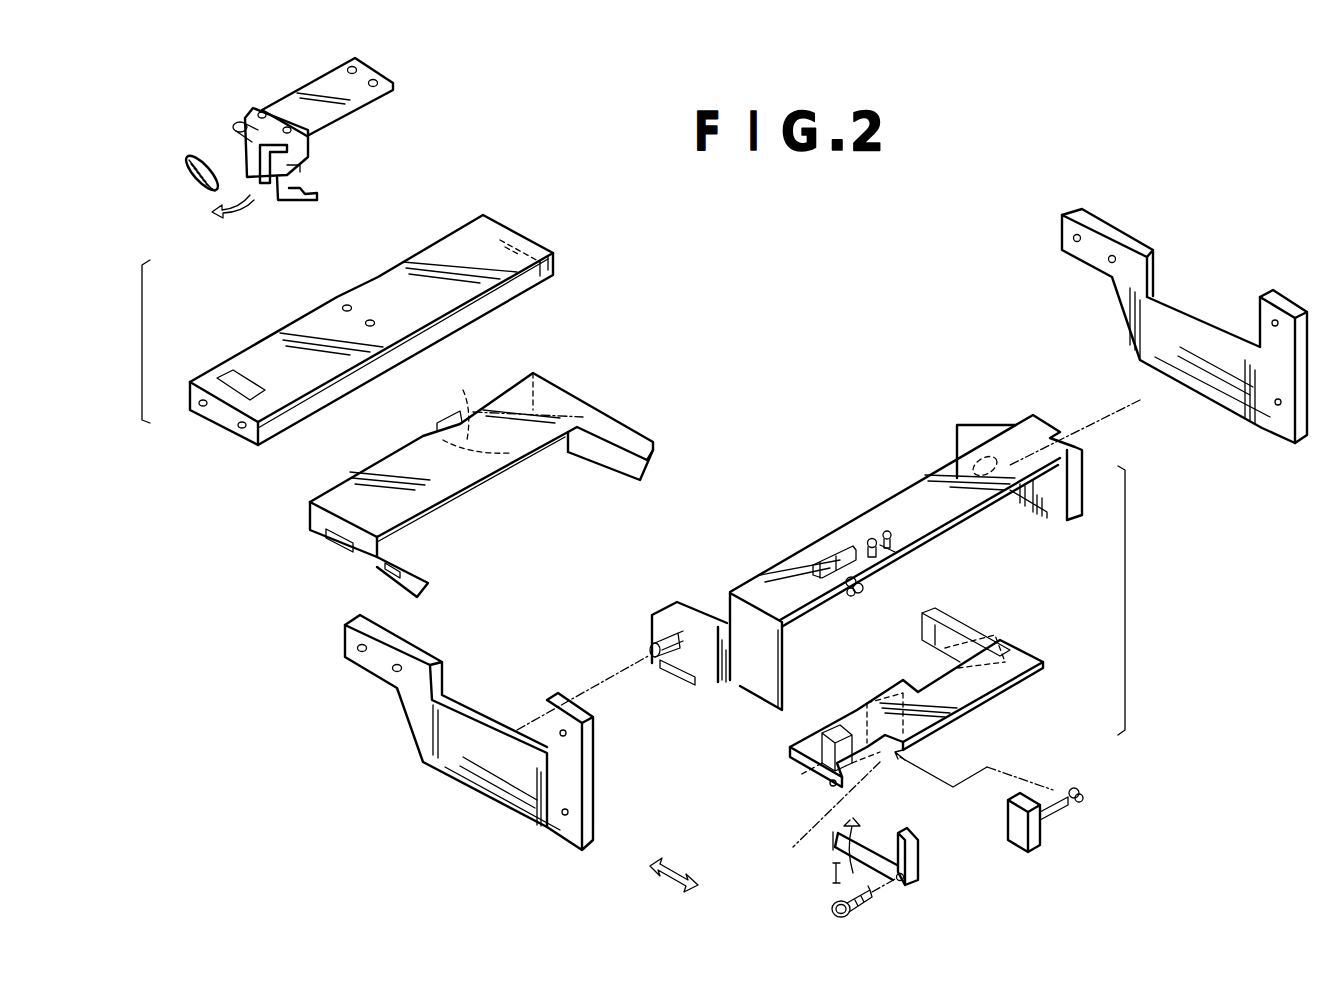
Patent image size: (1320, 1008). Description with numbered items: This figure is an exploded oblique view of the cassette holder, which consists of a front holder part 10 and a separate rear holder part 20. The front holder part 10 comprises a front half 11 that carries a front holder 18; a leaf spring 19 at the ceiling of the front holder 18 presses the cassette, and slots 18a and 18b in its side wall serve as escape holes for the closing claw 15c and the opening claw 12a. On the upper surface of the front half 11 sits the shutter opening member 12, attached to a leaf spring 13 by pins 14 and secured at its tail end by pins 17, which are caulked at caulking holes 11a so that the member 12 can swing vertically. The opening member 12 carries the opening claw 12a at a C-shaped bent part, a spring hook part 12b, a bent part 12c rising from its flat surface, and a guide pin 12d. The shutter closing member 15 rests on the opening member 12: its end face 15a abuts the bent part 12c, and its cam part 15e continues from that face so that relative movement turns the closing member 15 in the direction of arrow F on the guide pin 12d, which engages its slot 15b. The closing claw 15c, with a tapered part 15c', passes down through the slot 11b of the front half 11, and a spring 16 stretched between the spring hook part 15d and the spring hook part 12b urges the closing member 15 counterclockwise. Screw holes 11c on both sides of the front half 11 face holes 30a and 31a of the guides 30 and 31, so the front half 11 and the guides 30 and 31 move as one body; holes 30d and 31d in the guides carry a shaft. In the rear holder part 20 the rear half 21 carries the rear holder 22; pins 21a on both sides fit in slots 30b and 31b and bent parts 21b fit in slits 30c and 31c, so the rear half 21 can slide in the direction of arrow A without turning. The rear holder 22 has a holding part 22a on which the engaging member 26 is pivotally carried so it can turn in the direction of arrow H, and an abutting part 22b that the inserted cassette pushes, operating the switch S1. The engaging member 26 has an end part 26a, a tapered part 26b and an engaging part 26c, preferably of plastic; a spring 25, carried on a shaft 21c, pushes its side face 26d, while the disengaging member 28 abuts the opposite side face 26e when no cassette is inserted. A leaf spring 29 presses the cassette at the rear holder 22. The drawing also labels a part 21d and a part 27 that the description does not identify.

The front holder part 10 is at (129, 341).
The front half 11 is at (462, 236).
The caulking holes 11a is at (370, 319).
The slot 11b is at (235, 372).
The screw holes 11c is at (240, 430).
The shutter opening member 12 is at (298, 150).
The opening claw 12a is at (312, 205).
The spring hook part 12b is at (300, 170).
The bent part 12c is at (273, 105).
The guide pin 12d is at (255, 120).
The leaf spring 13 is at (333, 76).
The pins 14 is at (260, 110).
The shutter closing member 15 is at (247, 158).
The end face 15a is at (258, 150).
The slot 15b is at (263, 112).
The closing claw 15c is at (287, 223).
The tapered part 15c' is at (256, 218).
The spring hook part 15d is at (235, 127).
The cam part 15e is at (300, 141).
The spring 16 is at (190, 180).
The pins 17 is at (378, 82).
The front holder 18 is at (545, 380).
The slot 18a is at (332, 548).
The slot 18b is at (390, 575).
The leaf spring 19 is at (464, 392).
The rear holder part 20 is at (1137, 600).
The rear half 21 is at (783, 571).
The pins 21a is at (654, 660).
The bent parts 21b is at (686, 681).
The shaft 21c is at (872, 538).
The screw 21d is at (888, 530).
The rear holder 22 is at (1020, 658).
The holding part 22a is at (830, 790).
The abutting part 22b is at (890, 690).
The spring 25 is at (900, 548).
The engaging member 26 is at (862, 595).
The end part 26a is at (833, 840).
The tapered part 26b is at (833, 870).
The engaging part 26c is at (895, 880).
The side face 26d is at (921, 858).
The side face 26e is at (904, 834).
The screw 27 is at (875, 903).
The disengaging member 28 is at (833, 560).
The leaf spring 29 is at (975, 630).
The guide 30 is at (420, 735).
The facing holes 30a is at (396, 673).
The slot 30b is at (470, 785).
The slit 30c is at (518, 810).
The hole 30d is at (568, 735).
The guide 31 is at (1148, 252).
The facing holes 31a is at (1110, 263).
The slot 31b is at (1198, 373).
The slit 31c is at (1230, 400).
The hole 31d is at (1270, 322).
The switch S1 is at (842, 722).
The arrow F is at (227, 210).
The arrow H is at (861, 844).
The arrow A is at (672, 876).